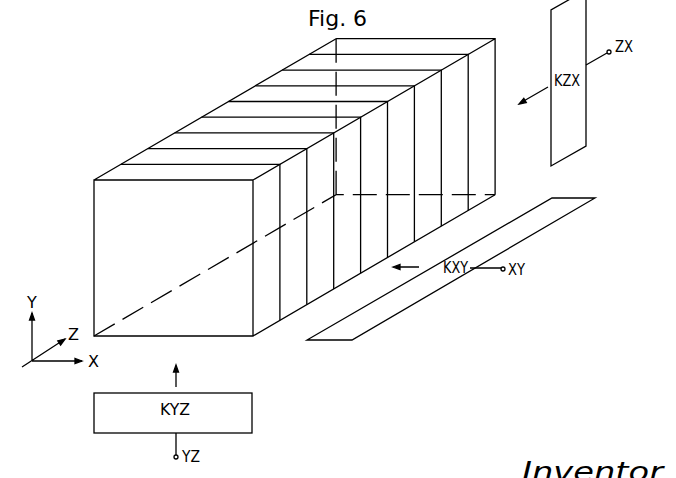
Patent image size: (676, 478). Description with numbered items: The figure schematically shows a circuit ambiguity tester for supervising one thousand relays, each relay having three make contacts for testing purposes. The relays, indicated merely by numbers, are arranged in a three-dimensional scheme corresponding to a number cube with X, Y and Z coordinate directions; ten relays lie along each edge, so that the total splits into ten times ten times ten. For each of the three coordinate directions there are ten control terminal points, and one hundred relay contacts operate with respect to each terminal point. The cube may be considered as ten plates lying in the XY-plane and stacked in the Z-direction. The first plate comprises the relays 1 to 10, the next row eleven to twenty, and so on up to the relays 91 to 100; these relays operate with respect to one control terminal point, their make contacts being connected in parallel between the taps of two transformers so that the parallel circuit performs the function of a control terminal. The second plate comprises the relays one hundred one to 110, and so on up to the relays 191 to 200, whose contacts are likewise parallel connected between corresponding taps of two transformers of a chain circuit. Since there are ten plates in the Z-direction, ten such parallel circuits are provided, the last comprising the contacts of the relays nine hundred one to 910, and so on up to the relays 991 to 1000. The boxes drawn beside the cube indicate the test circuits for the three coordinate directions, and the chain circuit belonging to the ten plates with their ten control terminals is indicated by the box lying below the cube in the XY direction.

The relay 1 is at (107, 327).
The relay 10 is at (242, 327).
The relay 100 is at (239, 188).
The relay 1000 is at (478, 50).
The relay 91 is at (104, 188).
The relay 191 is at (132, 173).
The relay 991 is at (347, 50).
The relay 910 is at (481, 188).
The relay 110 is at (266, 312).
The relay 200 is at (266, 173).